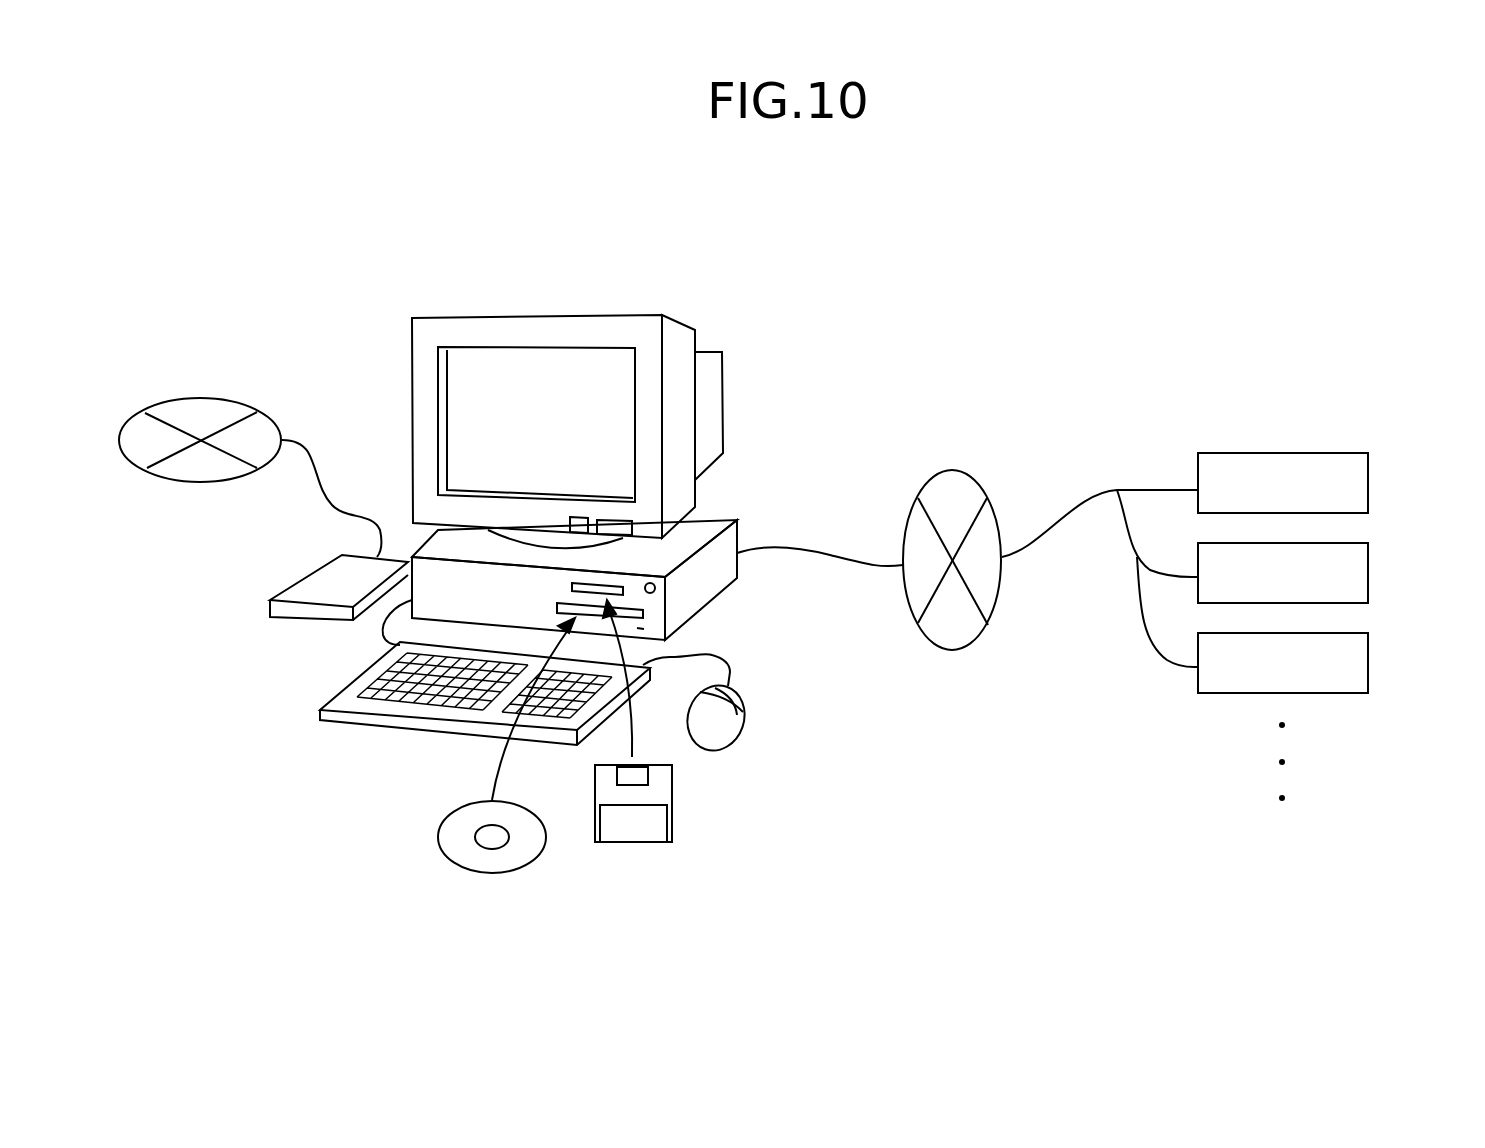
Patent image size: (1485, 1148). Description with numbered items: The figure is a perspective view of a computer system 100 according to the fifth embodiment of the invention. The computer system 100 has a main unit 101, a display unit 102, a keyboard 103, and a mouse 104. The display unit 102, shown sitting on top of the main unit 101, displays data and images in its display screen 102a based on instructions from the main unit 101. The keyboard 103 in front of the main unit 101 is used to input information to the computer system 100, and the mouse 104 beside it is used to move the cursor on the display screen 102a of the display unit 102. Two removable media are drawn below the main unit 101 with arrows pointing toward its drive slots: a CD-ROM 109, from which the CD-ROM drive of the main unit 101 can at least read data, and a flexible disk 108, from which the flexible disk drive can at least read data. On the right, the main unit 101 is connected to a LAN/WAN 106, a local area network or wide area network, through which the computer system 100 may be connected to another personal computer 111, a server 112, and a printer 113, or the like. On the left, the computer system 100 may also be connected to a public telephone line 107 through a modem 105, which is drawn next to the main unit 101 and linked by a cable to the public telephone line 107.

The computer system 100 is at (615, 255).
The main unit 101 is at (712, 520).
The display unit 102 is at (678, 343).
The display screen 102a is at (538, 377).
The keyboard 103 is at (343, 690).
The mouse 104 is at (718, 727).
The modem 105 is at (327, 582).
The LAN/WAN 106 is at (997, 687).
The public telephone line 107 is at (198, 397).
The flexible disk 108 is at (637, 843).
The CD-ROM 109 is at (437, 840).
The personal computer 111 is at (1368, 483).
The server 112 is at (1368, 573).
The printer 113 is at (1368, 663).